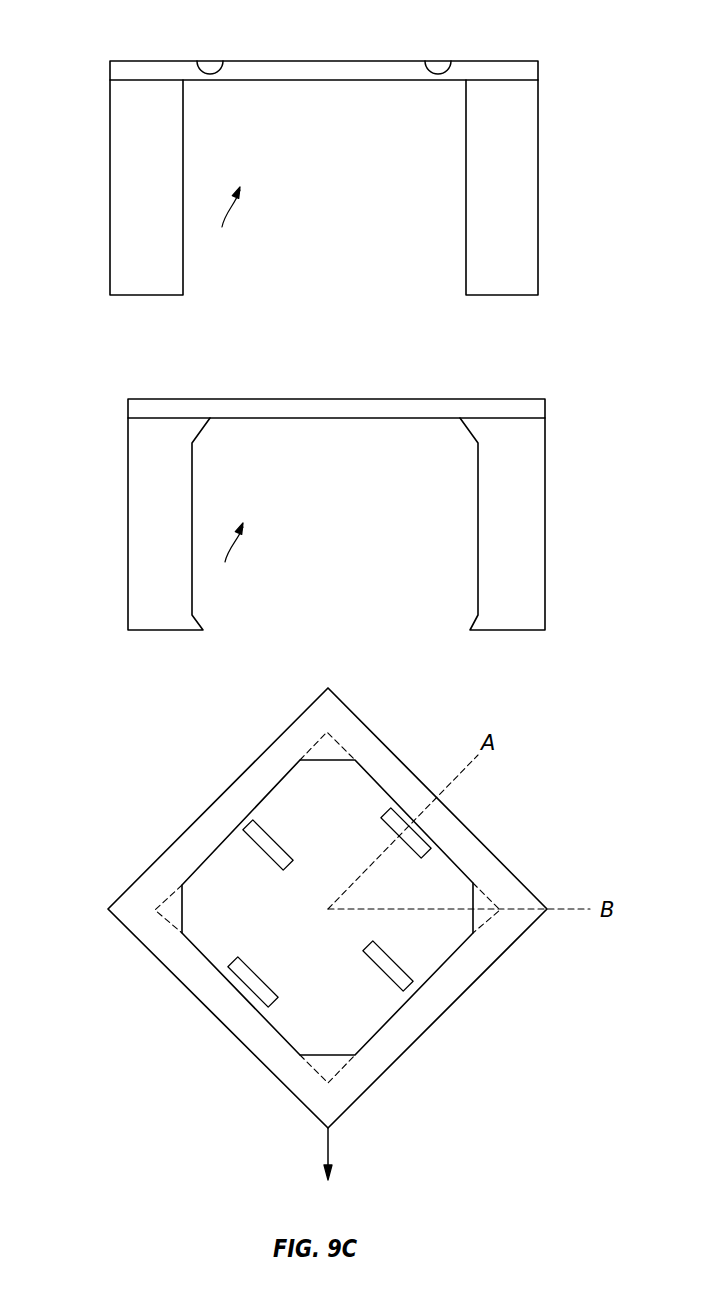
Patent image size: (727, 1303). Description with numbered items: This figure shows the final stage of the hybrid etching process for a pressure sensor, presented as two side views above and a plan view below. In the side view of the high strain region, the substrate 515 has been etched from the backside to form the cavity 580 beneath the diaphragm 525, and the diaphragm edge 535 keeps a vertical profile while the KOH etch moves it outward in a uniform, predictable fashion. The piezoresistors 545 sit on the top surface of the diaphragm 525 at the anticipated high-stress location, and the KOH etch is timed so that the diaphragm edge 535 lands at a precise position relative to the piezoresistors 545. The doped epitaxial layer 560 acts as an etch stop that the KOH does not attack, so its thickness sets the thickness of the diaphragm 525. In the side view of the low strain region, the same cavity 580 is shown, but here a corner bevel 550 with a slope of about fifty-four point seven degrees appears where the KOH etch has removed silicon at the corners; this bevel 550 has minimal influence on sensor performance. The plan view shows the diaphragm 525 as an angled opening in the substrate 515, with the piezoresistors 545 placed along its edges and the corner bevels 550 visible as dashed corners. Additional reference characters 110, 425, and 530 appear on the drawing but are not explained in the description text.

The sensor device 110 is at (330, 1152).
The diaphragm 425 is at (343, 970).
The substrate 515 is at (110, 230).
The diaphragm 525 is at (345, 392).
The support wall 530 is at (466, 263).
The diaphragm edge 535 is at (466, 80).
The piezoresistors 545 is at (210, 61).
The corner bevel 550 is at (210, 418).
The doped epitaxial layer 560 is at (538, 61).
The cavity 580 is at (224, 390).